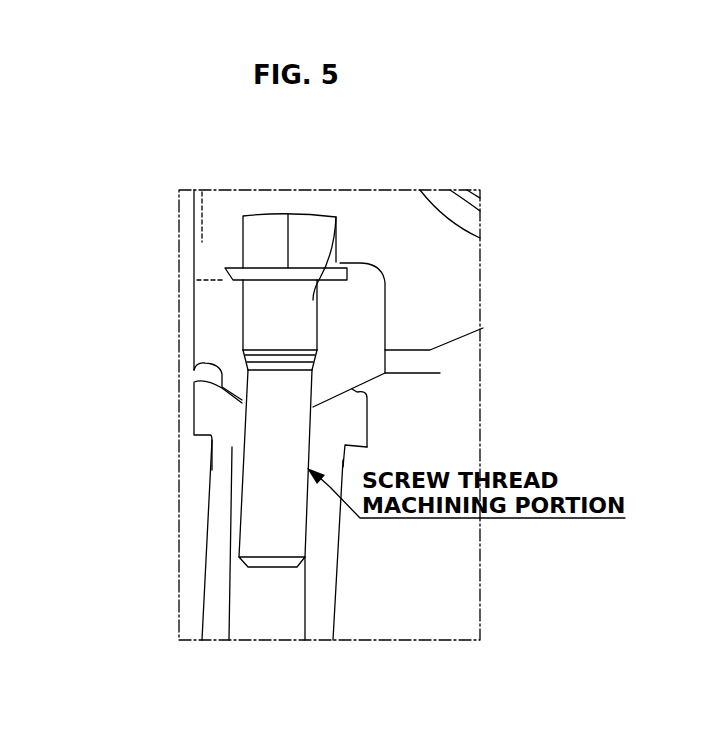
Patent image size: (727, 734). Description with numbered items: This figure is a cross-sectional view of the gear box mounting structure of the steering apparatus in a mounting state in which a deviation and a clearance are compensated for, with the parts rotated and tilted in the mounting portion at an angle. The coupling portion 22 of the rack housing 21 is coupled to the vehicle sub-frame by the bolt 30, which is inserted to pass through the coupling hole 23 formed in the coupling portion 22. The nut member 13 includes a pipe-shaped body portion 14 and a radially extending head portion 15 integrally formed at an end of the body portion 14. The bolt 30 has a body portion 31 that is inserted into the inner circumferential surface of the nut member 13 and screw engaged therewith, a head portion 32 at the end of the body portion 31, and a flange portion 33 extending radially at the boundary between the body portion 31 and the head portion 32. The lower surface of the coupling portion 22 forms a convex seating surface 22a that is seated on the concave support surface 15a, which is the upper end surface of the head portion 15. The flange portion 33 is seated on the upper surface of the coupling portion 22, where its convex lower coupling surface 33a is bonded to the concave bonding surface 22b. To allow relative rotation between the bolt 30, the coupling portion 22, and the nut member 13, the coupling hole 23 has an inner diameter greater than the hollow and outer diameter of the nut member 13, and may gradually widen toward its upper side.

The nut member 13 is at (187, 602).
The body portion 14 is at (217, 523).
The head portion 15 is at (203, 412).
The support surface 15a is at (203, 365).
The rack housing 21 is at (184, 225).
The coupling portion 22 is at (363, 332).
The seating surface 22a is at (370, 395).
The bonding surface 22b is at (335, 260).
The coupling hole 23 is at (242, 313).
The bolt 30 is at (265, 586).
The body portion 31 is at (290, 513).
The head portion 32 is at (303, 227).
The flange portion 33 is at (337, 217).
The coupling surface 33a is at (317, 283).